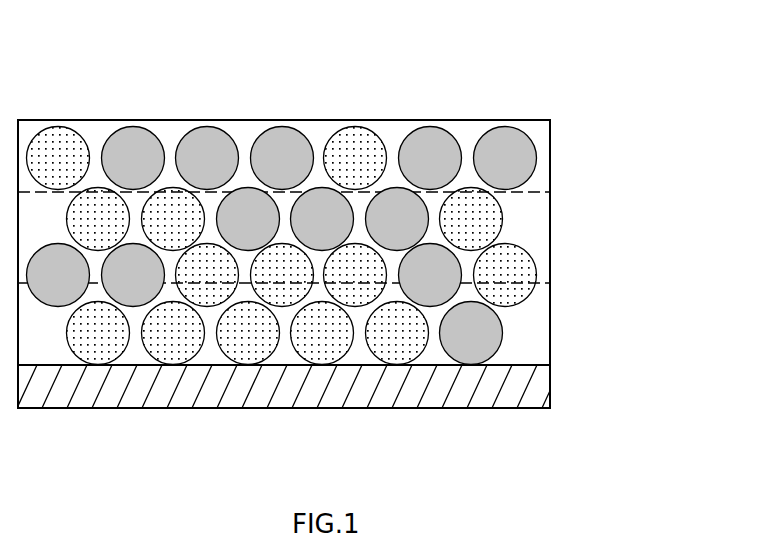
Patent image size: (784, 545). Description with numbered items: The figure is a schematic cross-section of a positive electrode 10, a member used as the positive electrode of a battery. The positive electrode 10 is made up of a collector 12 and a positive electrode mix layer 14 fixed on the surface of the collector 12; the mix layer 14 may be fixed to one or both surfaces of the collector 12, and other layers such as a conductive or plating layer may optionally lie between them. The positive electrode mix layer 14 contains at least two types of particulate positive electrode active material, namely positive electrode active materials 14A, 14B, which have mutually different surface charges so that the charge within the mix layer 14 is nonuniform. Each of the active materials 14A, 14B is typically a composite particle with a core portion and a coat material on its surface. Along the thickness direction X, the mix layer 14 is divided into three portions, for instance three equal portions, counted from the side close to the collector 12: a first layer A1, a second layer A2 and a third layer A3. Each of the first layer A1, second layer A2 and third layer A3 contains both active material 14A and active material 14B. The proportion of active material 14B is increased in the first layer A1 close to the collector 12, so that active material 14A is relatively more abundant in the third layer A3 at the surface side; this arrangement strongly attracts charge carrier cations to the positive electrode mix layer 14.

The positive electrode 10 is at (519, 50).
The collector 12 is at (550, 392).
The positive electrode mix layer 14 is at (349, 212).
The positive electrode active material 14A is at (130, 128).
The positive electrode active material 14B is at (352, 128).
The first layer A1 is at (561, 287).
The second layer A2 is at (561, 196).
The third layer A3 is at (561, 121).
The thickness direction X is at (718, 310).